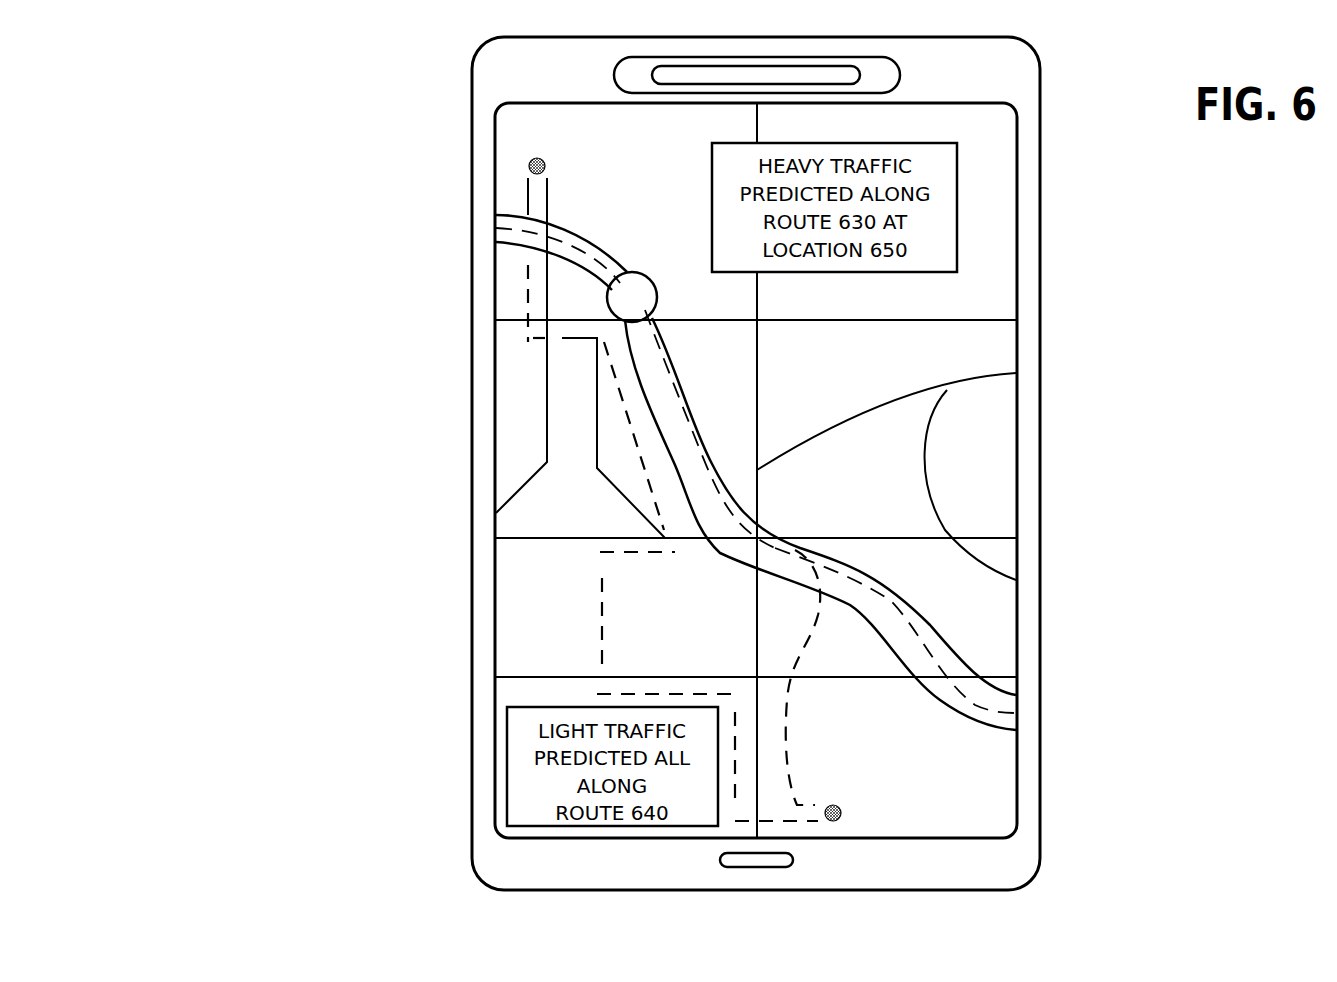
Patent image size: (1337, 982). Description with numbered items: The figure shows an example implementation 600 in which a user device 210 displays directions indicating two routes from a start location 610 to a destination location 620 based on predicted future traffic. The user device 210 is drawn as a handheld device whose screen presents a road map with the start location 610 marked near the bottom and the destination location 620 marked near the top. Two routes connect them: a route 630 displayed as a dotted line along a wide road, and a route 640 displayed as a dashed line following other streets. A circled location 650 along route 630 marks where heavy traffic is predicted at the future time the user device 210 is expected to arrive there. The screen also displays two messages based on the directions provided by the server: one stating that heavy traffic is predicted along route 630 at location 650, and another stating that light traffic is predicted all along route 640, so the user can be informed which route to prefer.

The example implementation 600 is at (288, 72).
The user device 210 is at (472, 147).
The start location 610 is at (890, 802).
The destination location 620 is at (597, 147).
The route 630 is at (793, 552).
The route 640 is at (602, 603).
The location 650 is at (658, 297).